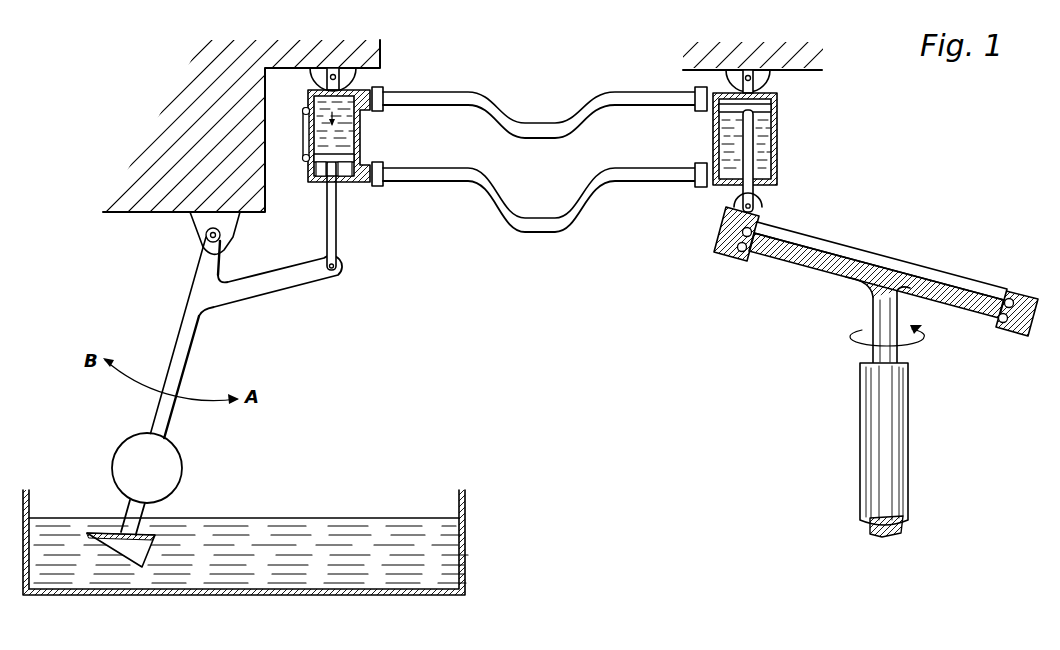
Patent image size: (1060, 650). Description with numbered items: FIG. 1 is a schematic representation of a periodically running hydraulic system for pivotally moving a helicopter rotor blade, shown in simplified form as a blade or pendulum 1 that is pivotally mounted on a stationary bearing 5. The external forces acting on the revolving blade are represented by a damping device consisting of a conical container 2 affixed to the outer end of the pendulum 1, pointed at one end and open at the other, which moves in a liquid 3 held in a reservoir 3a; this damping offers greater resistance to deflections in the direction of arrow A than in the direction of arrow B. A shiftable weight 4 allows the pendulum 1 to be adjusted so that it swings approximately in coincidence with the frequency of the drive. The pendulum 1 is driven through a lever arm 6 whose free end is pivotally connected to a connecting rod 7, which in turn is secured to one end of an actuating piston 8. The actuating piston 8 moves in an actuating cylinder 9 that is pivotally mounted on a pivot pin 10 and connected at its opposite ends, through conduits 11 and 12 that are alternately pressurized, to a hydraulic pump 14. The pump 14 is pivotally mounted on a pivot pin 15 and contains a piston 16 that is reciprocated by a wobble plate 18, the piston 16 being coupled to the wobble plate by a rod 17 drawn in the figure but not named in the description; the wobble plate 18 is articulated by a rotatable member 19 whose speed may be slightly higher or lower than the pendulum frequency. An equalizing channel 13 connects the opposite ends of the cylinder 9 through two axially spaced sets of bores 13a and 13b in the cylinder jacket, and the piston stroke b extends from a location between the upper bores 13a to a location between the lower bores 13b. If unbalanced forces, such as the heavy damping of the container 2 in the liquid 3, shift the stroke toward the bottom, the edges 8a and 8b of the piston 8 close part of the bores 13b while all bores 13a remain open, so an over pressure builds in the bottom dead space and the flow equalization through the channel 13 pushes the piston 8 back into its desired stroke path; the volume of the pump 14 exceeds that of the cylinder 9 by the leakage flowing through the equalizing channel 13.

The pendulum 1 is at (178, 358).
The conical container 2 is at (120, 548).
The liquid 3 is at (193, 540).
The reservoir 3a is at (461, 542).
The shiftable weight 4 is at (153, 468).
The stationary bearing 5 is at (208, 237).
The lever arm 6 is at (292, 278).
The connecting rod 7 is at (336, 220).
The actuating piston 8 is at (341, 163).
The piston edge 8a is at (325, 182).
The piston edge 8b is at (349, 167).
The actuating cylinder 9 is at (361, 128).
The pivot pin 10 is at (357, 75).
The conduit 11 is at (430, 97).
The conduit 12 is at (417, 175).
The equalizing channel 13 is at (303, 137).
The set of bores 13a is at (300, 113).
The set of bores 13b is at (309, 169).
The hydraulic pump 14 is at (778, 130).
The pivot pin 15 is at (756, 76).
The piston 16 is at (772, 105).
The piston rod 17 is at (758, 159).
The wobble plate 18 is at (727, 227).
The rotatable member 19 is at (882, 307).
The piston stroke b is at (331, 126).